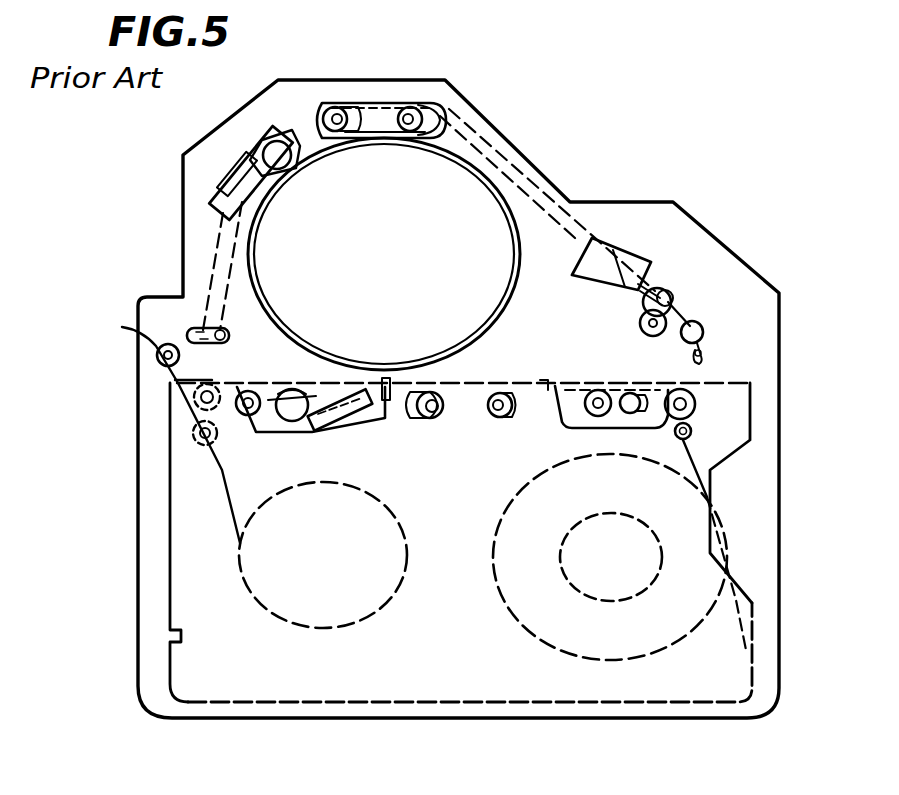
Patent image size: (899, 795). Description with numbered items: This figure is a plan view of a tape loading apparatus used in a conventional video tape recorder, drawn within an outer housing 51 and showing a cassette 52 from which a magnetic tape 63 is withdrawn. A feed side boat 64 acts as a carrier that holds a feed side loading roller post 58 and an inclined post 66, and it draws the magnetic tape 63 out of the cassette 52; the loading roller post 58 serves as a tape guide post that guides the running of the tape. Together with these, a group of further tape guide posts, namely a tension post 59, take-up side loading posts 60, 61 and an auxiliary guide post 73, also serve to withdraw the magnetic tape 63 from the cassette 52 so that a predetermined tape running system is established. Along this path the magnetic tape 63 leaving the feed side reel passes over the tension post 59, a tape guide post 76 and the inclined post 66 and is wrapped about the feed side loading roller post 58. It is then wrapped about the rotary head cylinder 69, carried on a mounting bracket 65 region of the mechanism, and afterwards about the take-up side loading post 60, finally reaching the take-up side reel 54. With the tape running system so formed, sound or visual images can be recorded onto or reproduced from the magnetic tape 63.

The housing 51 is at (592, 212).
The cassette 52 is at (785, 624).
The take-up side reel 54 is at (498, 592).
The feed side loading roller post 58 is at (267, 146).
The tension post 59 is at (249, 390).
The take-up side loading post 60 is at (334, 108).
The take-up side loading post 61 is at (413, 107).
The magnetic tape 63 is at (482, 153).
The feed side boat 64 is at (250, 162).
The roller bracket 65 is at (368, 105).
The inclined post 66 is at (227, 194).
The rotary head cylinder 69 is at (468, 204).
The auxiliary guide post 73 is at (698, 325).
The tape guide post 76 is at (197, 328).